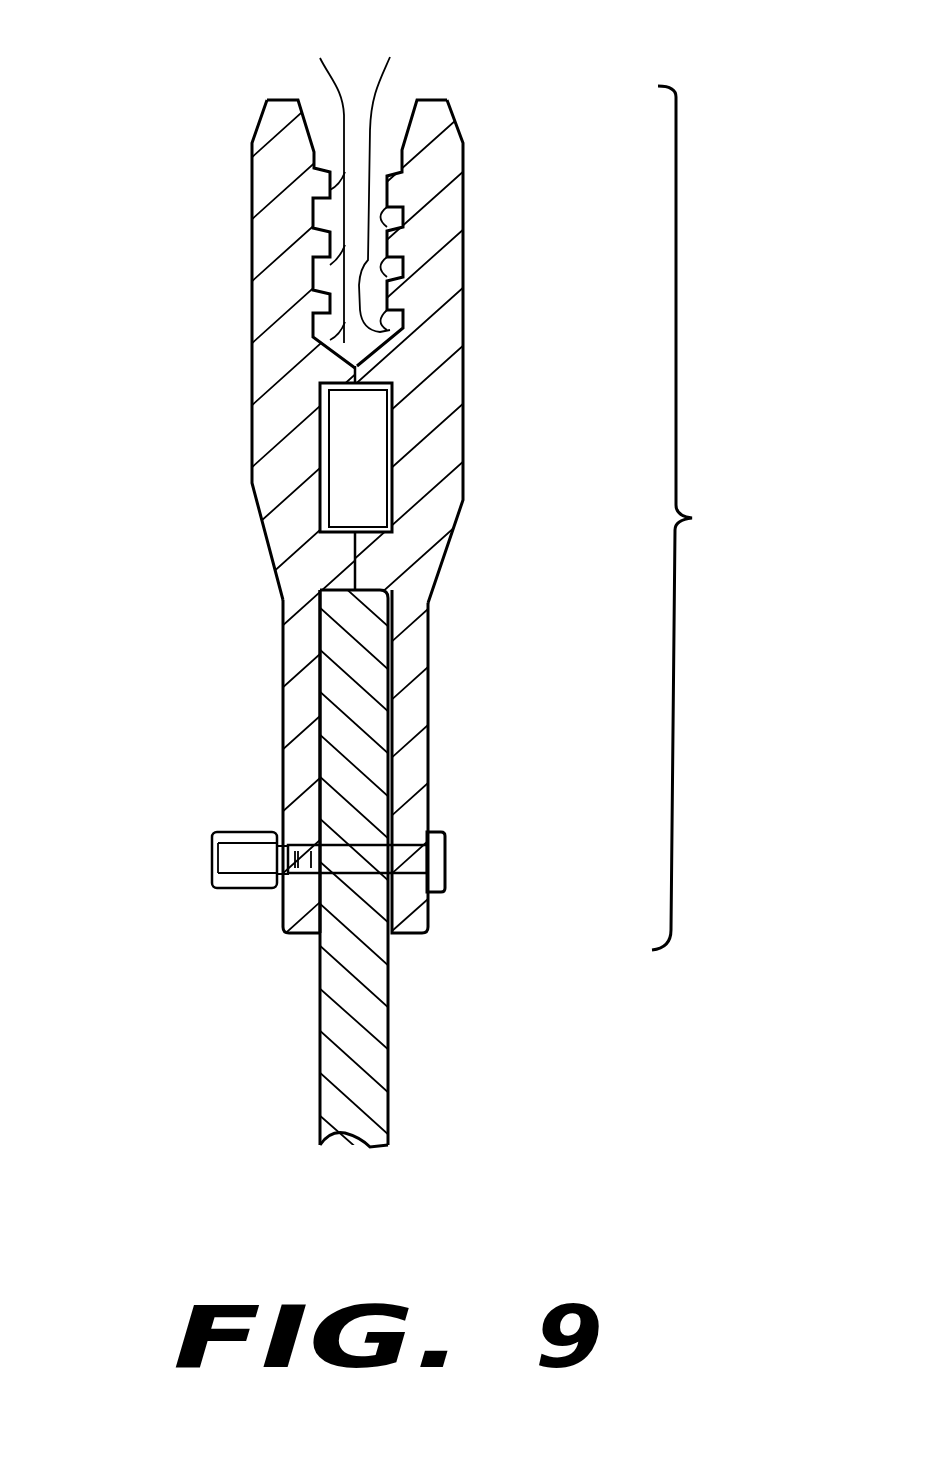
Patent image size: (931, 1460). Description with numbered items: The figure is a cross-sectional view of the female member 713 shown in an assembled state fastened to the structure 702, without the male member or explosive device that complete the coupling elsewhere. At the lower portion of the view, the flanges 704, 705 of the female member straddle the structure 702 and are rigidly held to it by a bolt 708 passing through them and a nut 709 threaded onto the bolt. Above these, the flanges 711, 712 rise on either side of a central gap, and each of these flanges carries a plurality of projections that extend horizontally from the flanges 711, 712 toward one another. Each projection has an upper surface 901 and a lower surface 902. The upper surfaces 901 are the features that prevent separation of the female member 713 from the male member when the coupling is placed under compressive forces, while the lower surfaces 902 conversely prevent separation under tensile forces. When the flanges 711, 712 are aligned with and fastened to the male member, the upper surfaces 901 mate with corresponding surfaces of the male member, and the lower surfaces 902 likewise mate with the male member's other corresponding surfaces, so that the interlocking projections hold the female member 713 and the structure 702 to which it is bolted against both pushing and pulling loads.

The upper surface 901 is at (295, 171).
The lower surface 902 is at (414, 166).
The flange 711 is at (282, 242).
The flange 712 is at (438, 253).
The female member 713 is at (722, 518).
The flange 704 is at (303, 665).
The flange 705 is at (408, 670).
The nut 709 is at (232, 857).
The bolt 708 is at (443, 858).
The structure 702 is at (360, 1020).